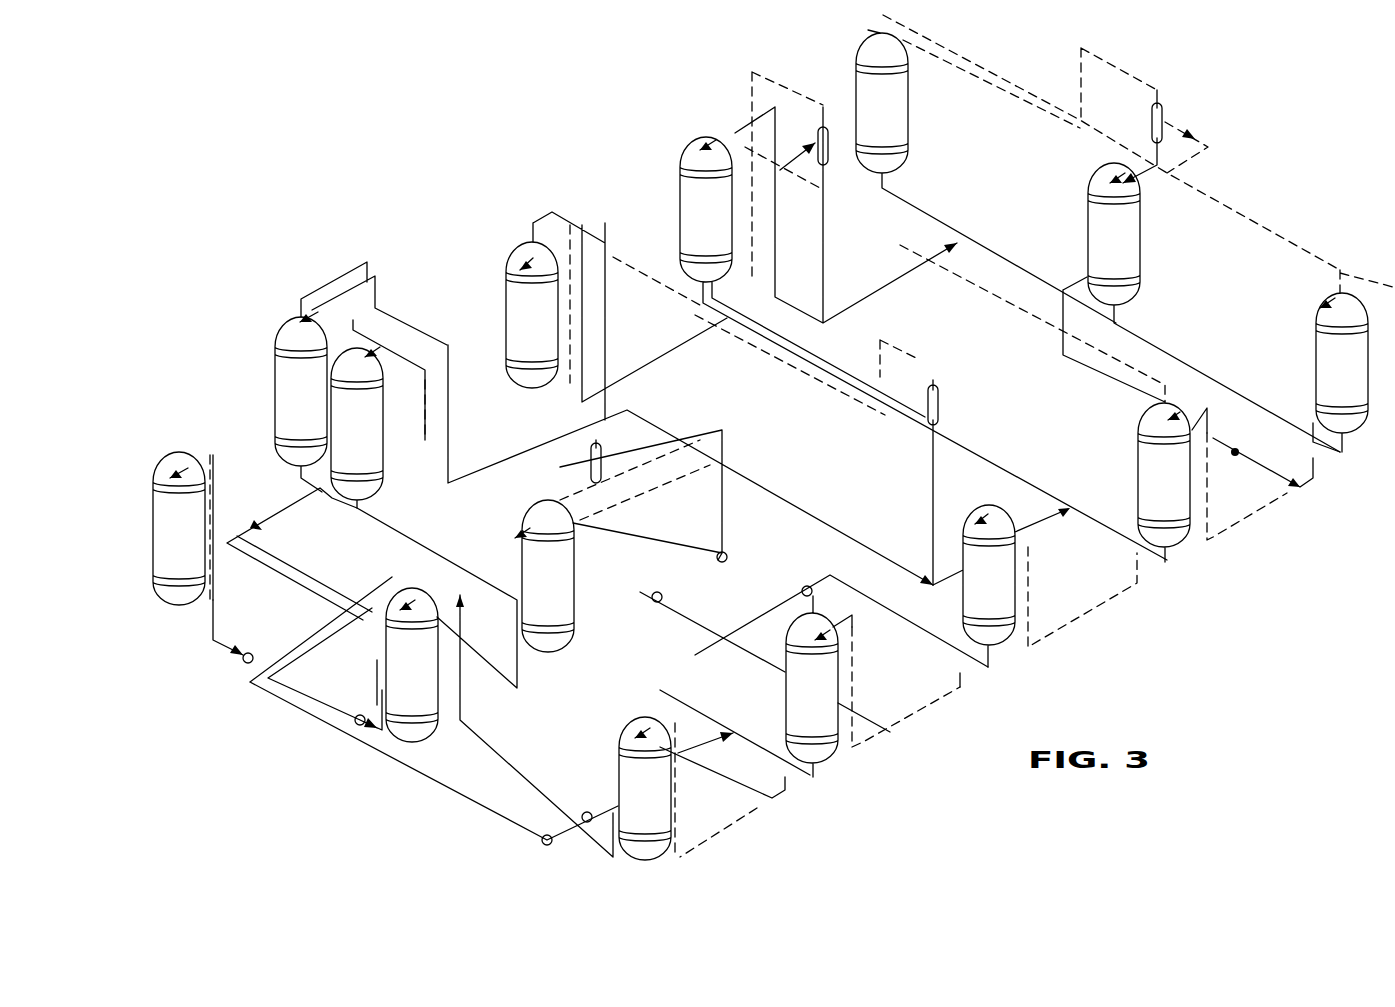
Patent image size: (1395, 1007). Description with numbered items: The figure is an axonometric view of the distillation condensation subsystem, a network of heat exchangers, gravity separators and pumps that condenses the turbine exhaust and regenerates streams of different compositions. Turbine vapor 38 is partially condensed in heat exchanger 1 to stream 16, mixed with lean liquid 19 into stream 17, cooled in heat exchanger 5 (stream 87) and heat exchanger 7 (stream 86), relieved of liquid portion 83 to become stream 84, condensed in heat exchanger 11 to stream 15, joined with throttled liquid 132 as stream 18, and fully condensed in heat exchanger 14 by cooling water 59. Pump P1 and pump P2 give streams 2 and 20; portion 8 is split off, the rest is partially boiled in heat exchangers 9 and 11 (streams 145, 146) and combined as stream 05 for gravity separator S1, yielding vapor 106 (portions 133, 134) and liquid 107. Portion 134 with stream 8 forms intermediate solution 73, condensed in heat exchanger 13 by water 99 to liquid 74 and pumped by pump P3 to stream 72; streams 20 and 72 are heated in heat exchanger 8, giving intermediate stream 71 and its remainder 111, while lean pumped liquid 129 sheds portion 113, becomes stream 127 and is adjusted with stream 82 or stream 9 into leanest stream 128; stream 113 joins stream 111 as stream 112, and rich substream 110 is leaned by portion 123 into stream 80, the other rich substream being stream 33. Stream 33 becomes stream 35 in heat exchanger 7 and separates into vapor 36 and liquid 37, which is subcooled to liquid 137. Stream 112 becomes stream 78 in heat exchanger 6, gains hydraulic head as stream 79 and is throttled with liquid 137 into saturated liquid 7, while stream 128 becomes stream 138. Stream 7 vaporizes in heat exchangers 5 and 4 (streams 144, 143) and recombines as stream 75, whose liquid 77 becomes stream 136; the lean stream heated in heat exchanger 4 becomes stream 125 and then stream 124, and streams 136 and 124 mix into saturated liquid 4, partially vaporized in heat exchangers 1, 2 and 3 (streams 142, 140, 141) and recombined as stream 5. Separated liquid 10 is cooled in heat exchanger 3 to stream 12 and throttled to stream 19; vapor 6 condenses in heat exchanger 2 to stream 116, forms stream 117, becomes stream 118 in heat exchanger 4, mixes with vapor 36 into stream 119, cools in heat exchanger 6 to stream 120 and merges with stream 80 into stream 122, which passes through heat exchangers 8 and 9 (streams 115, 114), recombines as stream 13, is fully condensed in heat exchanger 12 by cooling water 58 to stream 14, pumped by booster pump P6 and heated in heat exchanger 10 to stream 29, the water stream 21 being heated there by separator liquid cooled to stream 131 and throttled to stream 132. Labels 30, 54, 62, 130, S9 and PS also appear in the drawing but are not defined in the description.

The adsorber vessel 1 is at (982, 570).
The adsorber vessel 2 is at (748, 417).
The adsorber vessel 3 is at (1214, 307).
The adsorber vessel 4 is at (923, 348).
The adsorber vessel 5 is at (1195, 130).
The adsorber vessel 6 is at (1155, 104).
The adsorber vessel 7 is at (1040, 512).
The adsorber vessel 8 is at (376, 517).
The adsorber vessel 9 is at (490, 540).
The adsorber vessel 10 is at (855, 394).
The adsorber vessel 11 is at (812, 686).
The adsorber vessel 12 is at (1075, 290).
The adsorber vessel 13 is at (331, 594).
The adsorber vessel 14 is at (442, 730).
The line 15 is at (785, 790).
The line 16 is at (1312, 465).
The line 17 is at (1222, 416).
The line 18 is at (694, 720).
The line 19 is at (1278, 465).
The line 20 is at (315, 540).
The line 21 is at (540, 650).
The line 29 is at (262, 530).
The header 30 is at (355, 270).
The line 33 is at (388, 490).
The line 35 is at (985, 505).
The line 36 is at (620, 255).
The line 37 is at (925, 445).
The line 38 is at (1378, 275).
The valve 54 is at (1152, 125).
The line 58 is at (185, 442).
The line 59 is at (655, 725).
The line 62 is at (620, 640).
The line 71 is at (372, 280).
The line 72 is at (290, 440).
The line 73 is at (445, 630).
The line 74 is at (377, 665).
The line 75 is at (812, 158).
The line 77 is at (830, 180).
The line 78 is at (592, 240).
The line 79 is at (910, 572).
The line 80 is at (410, 455).
The line 82 is at (612, 540).
The line 83 is at (710, 628).
The line 84 is at (849, 624).
The line 86 is at (960, 668).
The line 87 is at (1030, 555).
The line 99 is at (410, 590).
The line 05 is at (600, 455).
The line 106 is at (612, 420).
The line 107 is at (712, 520).
The line 110 is at (480, 450).
The line 111 is at (500, 410).
The line 112 is at (520, 375).
The line 113 is at (650, 520).
The line 114 is at (280, 440).
The line 115 is at (330, 525).
The line 116 is at (885, 180).
The line 117 is at (750, 130).
The line 118 is at (672, 285).
The line 119 is at (540, 230).
The line 120 is at (505, 320).
The line 122 is at (410, 335).
The line 123 is at (440, 352).
The line 124 is at (810, 305).
The line 125 is at (818, 140).
The line 127 is at (722, 468).
The line 128 is at (678, 308).
The line 129 is at (712, 557).
The line 130 is at (489, 607).
The line 131 is at (605, 675).
The line 132 is at (740, 750).
The line 133 is at (575, 503).
The line 134 is at (495, 545).
The line 136 is at (828, 306).
The line 137 is at (945, 585).
The line 138 is at (590, 225).
The line 140 is at (880, 48).
The line 141 is at (1110, 170).
The line 142 is at (1340, 300).
The line 143 is at (715, 140).
The line 144 is at (1158, 408).
The line 145 is at (300, 312).
The line 146 is at (800, 592).
The sensor S1 is at (622, 460).
The sensor S9 is at (825, 132).
The pressure sensor PS is at (657, 603).
The pump P1 is at (585, 817).
The pump P2 is at (547, 838).
The pump P3 is at (358, 714).
The pump P6 is at (242, 665).